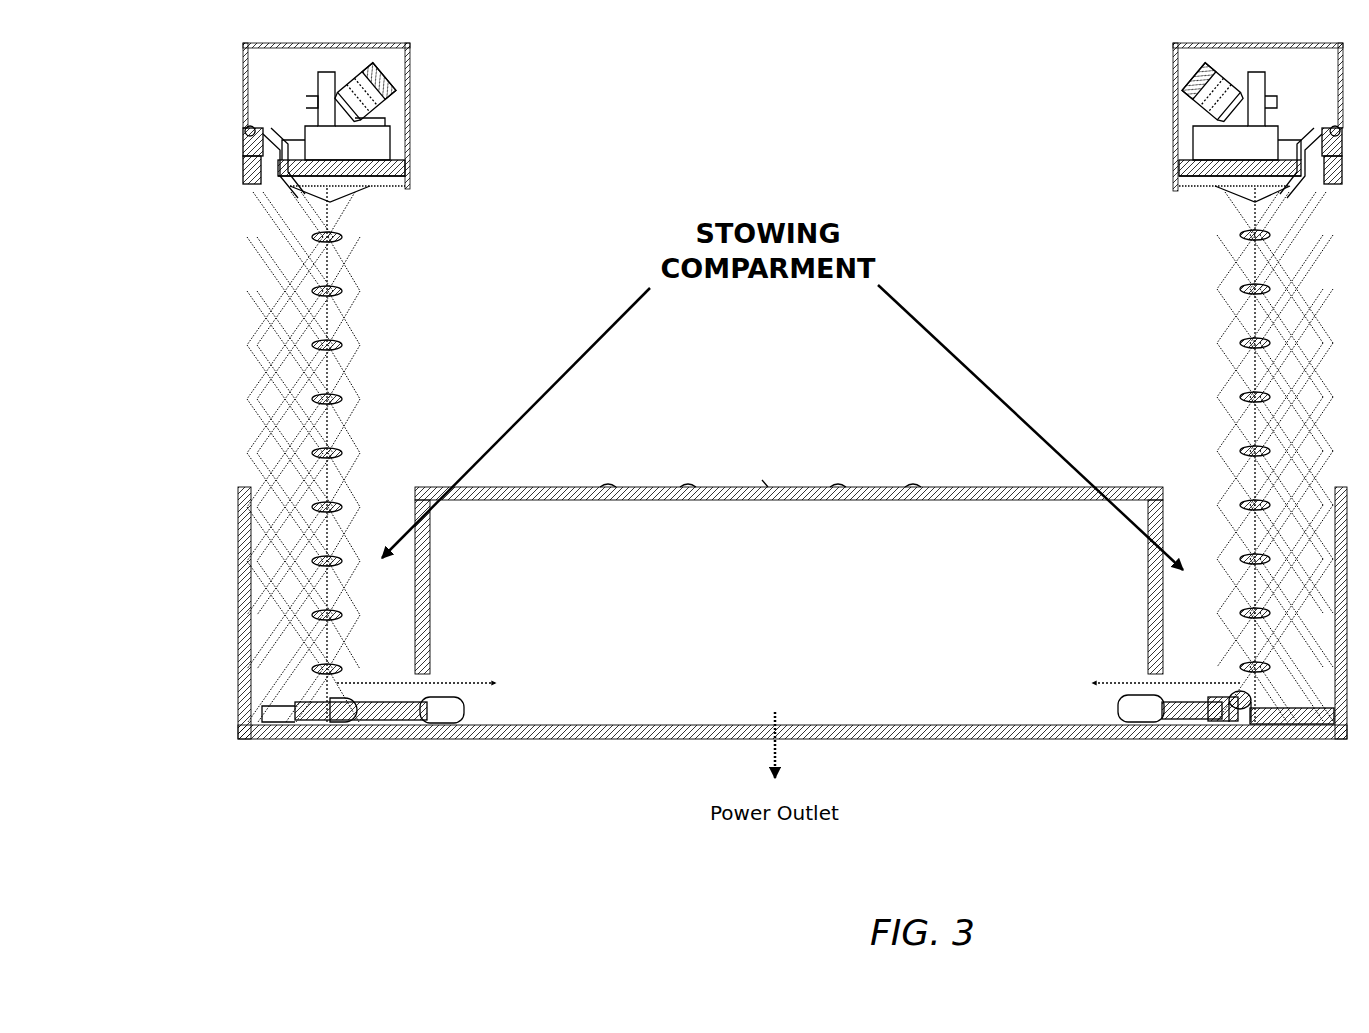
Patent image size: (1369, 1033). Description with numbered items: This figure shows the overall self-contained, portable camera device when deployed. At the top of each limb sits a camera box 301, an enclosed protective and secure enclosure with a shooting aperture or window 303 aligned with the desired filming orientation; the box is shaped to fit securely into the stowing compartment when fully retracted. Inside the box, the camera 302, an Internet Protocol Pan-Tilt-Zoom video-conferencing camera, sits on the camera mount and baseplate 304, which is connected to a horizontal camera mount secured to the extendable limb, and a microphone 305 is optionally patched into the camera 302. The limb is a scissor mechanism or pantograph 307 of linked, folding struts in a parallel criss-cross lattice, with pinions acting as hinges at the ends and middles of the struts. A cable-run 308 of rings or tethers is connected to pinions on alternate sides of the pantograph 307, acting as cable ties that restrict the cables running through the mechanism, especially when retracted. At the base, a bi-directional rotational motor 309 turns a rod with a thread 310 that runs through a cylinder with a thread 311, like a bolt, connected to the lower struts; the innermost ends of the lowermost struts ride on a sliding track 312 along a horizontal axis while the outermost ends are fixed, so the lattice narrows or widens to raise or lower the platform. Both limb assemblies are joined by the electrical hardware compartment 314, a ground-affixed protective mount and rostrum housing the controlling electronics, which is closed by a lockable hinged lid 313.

The camera box 301 is at (240, 55).
The camera 302 is at (362, 96).
The shooting aperture or window 303 is at (402, 88).
The camera mount and baseplate 304 is at (398, 167).
The microphone 305 is at (246, 150).
The pantograph 307 is at (272, 432).
The cable-run 308 is at (1250, 257).
The bi-directional rotational motor 309 is at (1114, 707).
The rod with a thread 310 is at (1198, 710).
The cylinder with a thread 311 is at (1238, 716).
The sliding track 312 is at (1210, 724).
The lockable hinged lid 313 is at (765, 470).
The electrical hardware compartment 314 is at (792, 613).